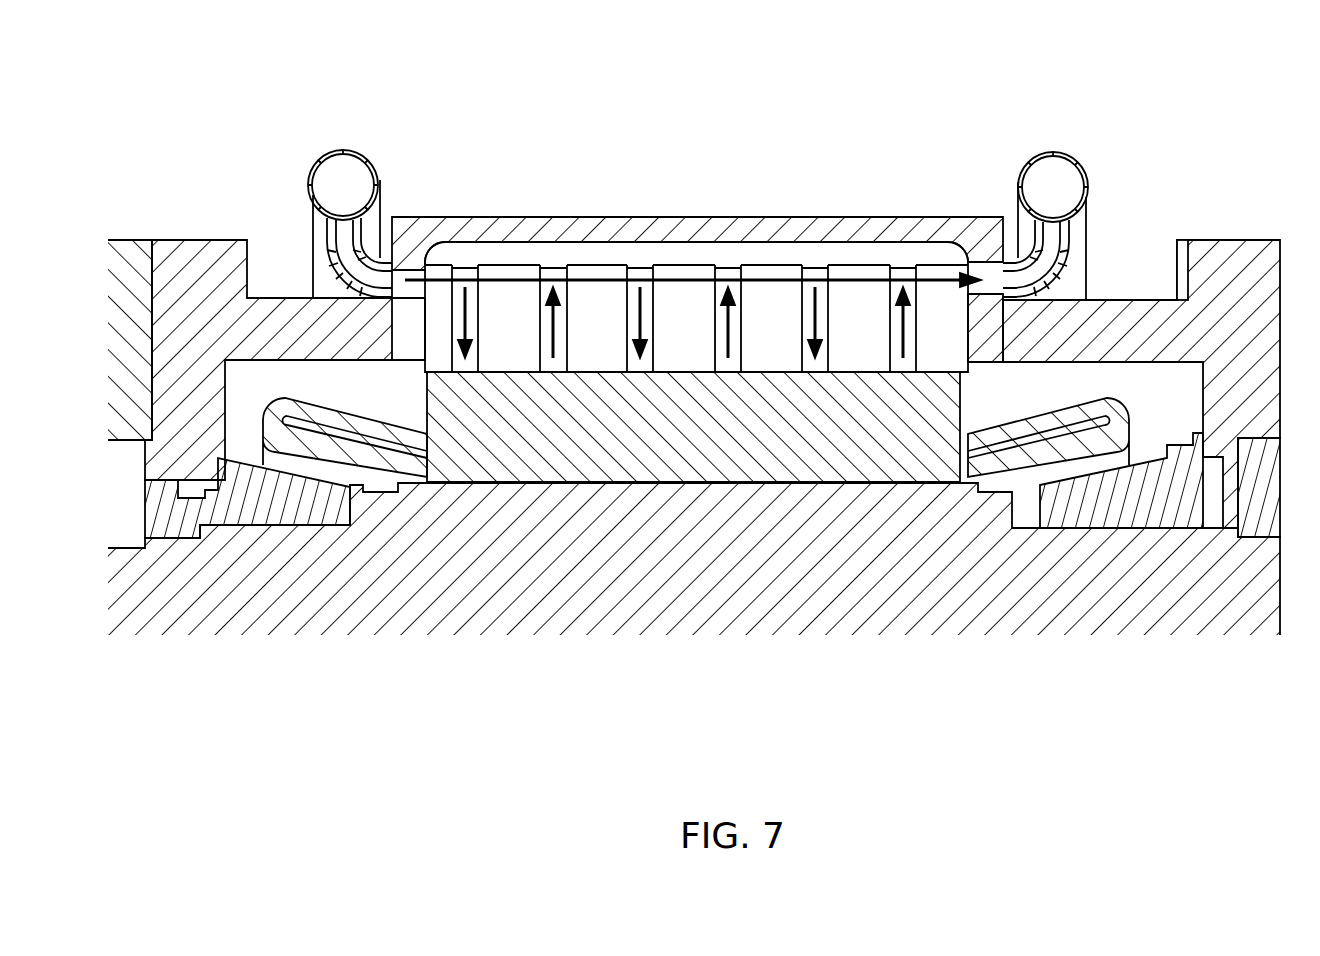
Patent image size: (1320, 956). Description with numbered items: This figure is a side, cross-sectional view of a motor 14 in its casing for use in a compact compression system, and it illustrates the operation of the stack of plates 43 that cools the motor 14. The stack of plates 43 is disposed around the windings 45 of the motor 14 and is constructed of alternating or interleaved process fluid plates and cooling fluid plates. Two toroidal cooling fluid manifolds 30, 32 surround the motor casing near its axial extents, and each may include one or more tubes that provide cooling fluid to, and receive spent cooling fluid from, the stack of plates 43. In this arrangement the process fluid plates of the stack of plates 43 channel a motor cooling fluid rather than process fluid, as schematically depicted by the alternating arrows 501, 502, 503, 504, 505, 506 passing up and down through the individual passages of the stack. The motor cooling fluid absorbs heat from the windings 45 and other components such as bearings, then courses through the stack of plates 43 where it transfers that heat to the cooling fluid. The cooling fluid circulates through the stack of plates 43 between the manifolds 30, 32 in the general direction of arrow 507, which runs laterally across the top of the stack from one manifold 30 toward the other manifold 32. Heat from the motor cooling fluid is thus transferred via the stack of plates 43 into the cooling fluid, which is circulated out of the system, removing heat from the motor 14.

The motor 14 is at (510, 92).
The cooling fluid manifold 30 is at (345, 157).
The cooling fluid manifold 32 is at (1057, 157).
The stack of plates 43 is at (845, 278).
The windings 45 is at (808, 462).
The arrow 501 is at (468, 326).
The arrow 502 is at (557, 345).
The arrow 503 is at (645, 330).
The arrow 504 is at (730, 343).
The arrow 505 is at (817, 325).
The arrow 506 is at (905, 322).
The arrow 507 is at (598, 280).